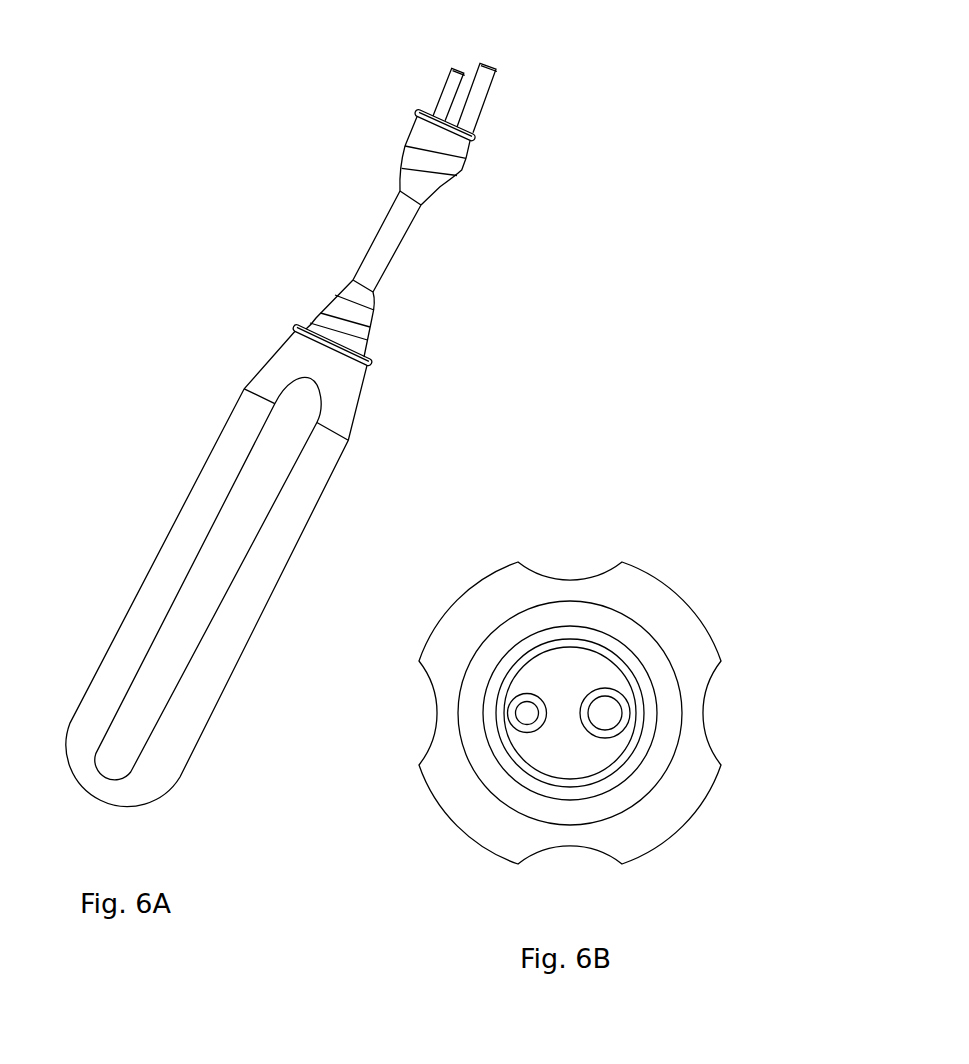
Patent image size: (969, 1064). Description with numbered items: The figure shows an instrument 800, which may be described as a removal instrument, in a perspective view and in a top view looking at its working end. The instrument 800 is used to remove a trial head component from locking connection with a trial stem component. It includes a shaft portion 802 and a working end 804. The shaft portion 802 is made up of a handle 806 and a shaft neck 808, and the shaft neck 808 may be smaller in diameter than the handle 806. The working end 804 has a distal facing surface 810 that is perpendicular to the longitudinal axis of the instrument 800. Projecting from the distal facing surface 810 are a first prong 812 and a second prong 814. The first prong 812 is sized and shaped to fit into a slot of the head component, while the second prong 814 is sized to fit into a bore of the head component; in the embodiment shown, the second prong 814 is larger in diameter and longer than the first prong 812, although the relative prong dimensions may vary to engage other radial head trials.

In FIG. 6A, the instrument 800 is at (236, 193).
In FIG. 6B, the instrument 800 is at (697, 536).
In FIG. 6A, the shaft portion 802 is at (412, 437).
In FIG. 6A, the working end 804 is at (498, 111).
In FIG. 6A, the handle 806 is at (178, 530).
In FIG. 6B, the handle 806 is at (692, 630).
In FIG. 6A, the shaft neck 808 is at (380, 233).
In FIG. 6B, the shaft neck 808 is at (662, 713).
In FIG. 6A, the distal facing surface 810 is at (466, 128).
In FIG. 6B, the distal facing surface 810 is at (543, 676).
In FIG. 6A, the first prong 812 is at (443, 95).
In FIG. 6B, the first prong 812 is at (527, 713).
In FIG. 6A, the second prong 814 is at (490, 82).
In FIG. 6B, the second prong 814 is at (613, 723).